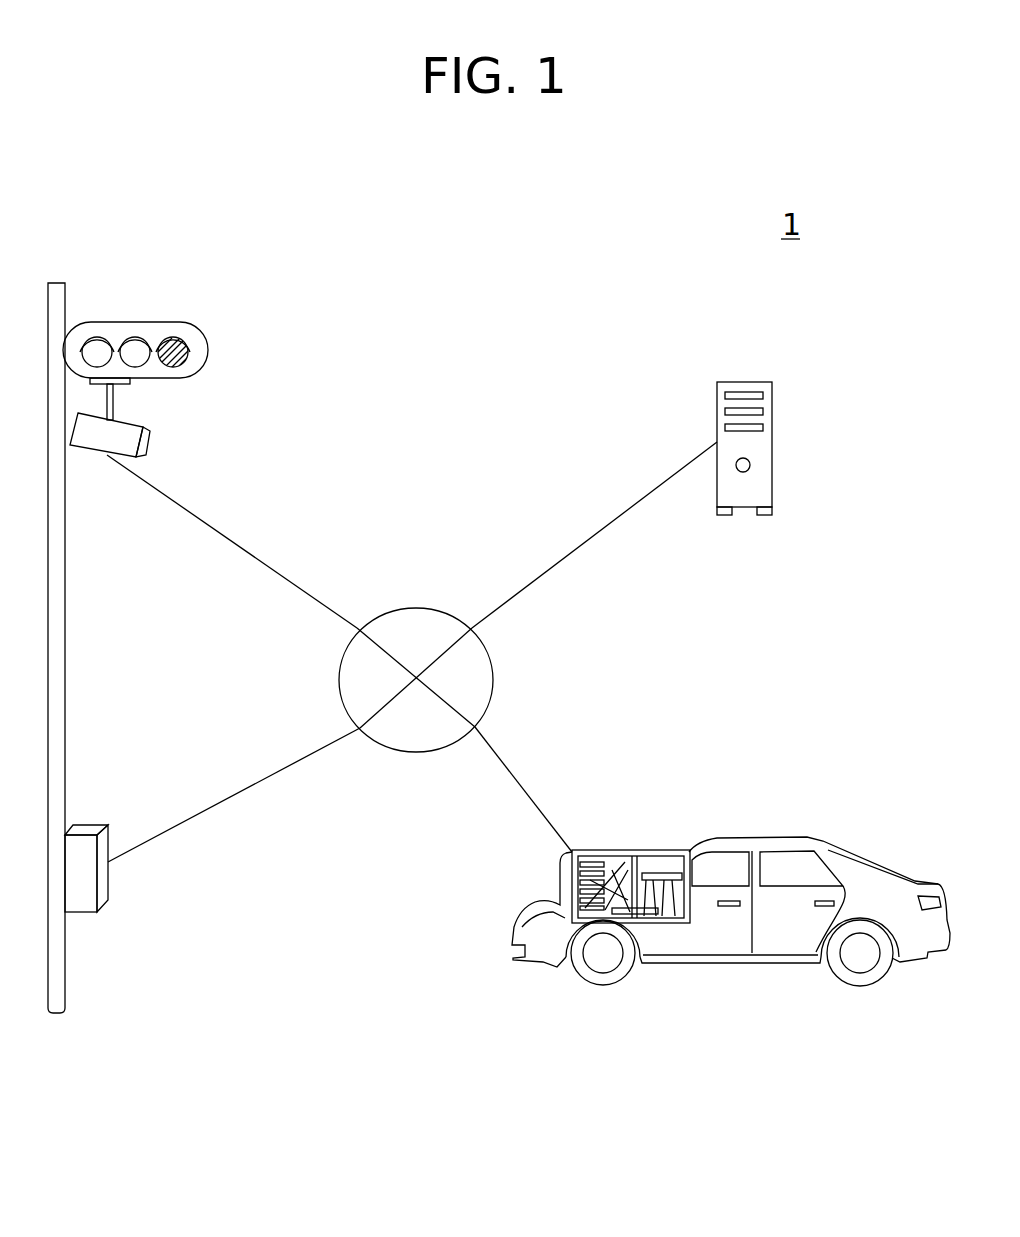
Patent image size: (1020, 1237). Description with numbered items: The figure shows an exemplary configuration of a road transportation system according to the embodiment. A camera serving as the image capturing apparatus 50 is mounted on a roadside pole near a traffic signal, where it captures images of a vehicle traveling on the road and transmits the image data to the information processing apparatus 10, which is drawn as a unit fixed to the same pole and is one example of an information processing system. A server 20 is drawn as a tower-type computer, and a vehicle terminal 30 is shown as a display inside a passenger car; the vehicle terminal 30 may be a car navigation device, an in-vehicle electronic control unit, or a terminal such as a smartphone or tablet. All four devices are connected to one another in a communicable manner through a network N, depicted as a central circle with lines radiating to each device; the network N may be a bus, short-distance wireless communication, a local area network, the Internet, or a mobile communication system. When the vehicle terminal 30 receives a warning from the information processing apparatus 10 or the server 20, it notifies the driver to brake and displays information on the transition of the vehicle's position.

The information processing apparatus 10 is at (108, 888).
The server 20 is at (772, 398).
The vehicle terminal 30 is at (643, 920).
The image capturing apparatus 50 is at (148, 436).
The network N is at (448, 608).